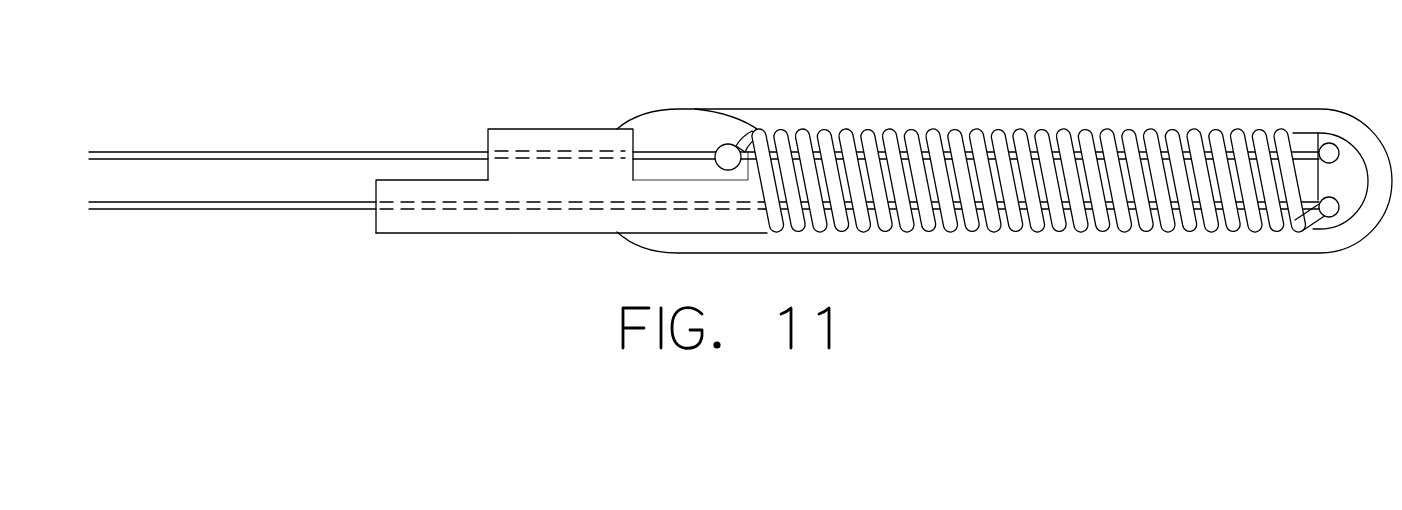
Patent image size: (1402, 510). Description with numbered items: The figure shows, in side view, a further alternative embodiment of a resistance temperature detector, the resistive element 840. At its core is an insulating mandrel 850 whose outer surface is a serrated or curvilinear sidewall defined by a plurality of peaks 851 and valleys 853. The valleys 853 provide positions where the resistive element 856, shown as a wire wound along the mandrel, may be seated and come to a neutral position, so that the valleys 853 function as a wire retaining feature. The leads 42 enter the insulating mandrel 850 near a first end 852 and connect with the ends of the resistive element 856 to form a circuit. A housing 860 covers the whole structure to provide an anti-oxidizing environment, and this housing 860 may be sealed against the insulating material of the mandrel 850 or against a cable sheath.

The leads 42 is at (288, 153).
The resistive element 840 is at (863, 151).
The mandrel 850 is at (556, 223).
The peaks 851 is at (1031, 156).
The first end 852 is at (488, 142).
The valleys 853 is at (965, 233).
The resistive element 856 is at (1125, 233).
The housing 860 is at (972, 109).